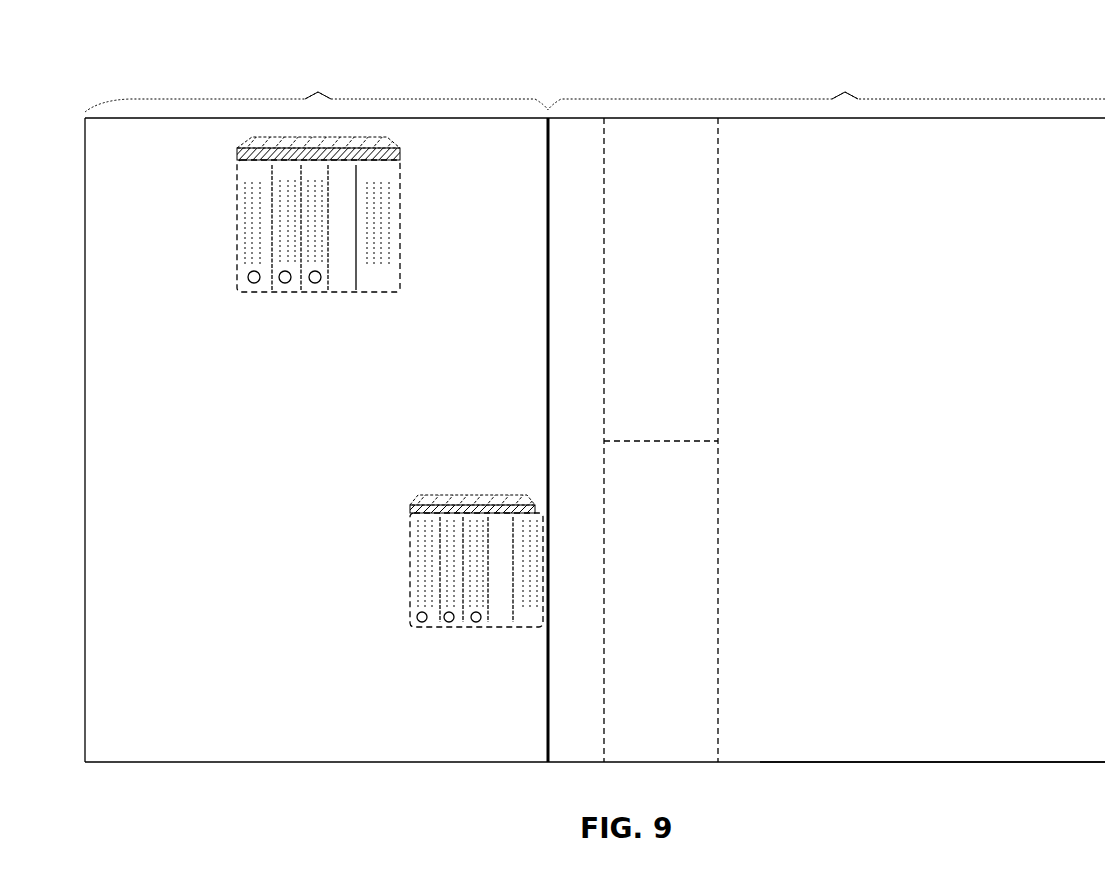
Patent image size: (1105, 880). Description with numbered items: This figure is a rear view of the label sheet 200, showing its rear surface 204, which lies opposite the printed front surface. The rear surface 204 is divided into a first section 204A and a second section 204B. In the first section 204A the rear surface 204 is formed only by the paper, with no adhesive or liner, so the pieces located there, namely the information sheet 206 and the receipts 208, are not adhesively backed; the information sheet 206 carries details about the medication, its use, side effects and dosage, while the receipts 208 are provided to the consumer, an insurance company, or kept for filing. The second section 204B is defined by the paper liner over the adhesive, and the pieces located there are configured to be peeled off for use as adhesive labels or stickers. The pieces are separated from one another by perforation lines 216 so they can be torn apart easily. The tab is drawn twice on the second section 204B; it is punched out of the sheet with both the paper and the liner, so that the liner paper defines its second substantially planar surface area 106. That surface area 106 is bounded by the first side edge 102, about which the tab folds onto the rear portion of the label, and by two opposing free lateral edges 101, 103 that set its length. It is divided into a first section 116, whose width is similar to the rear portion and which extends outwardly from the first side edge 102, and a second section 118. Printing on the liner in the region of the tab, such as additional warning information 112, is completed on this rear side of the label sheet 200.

The free lateral edge 101 is at (237, 160).
The first side edge 102 is at (375, 292).
The free lateral edge 103 is at (400, 158).
The substantially planar surface area 106 is at (327, 167).
The additional warning information 112 is at (283, 158).
The first section 116 is at (240, 197).
The second section 118 is at (280, 178).
The label sheet 200 is at (1068, 78).
The rear surface 204 is at (463, 742).
The first section 204A is at (849, 84).
The second section 204B is at (321, 84).
The information sheet 206 is at (866, 747).
The receipts 208 is at (675, 140).
The perforation lines 216 is at (604, 148).